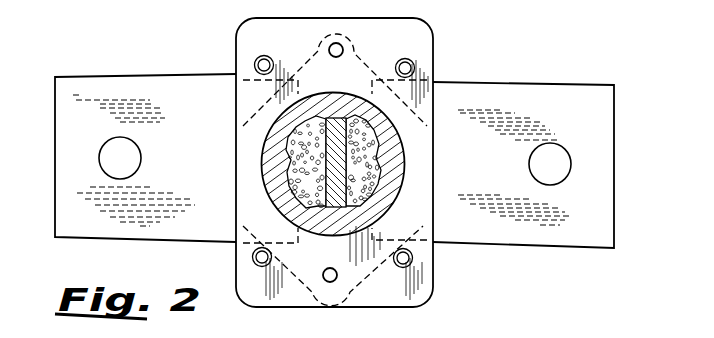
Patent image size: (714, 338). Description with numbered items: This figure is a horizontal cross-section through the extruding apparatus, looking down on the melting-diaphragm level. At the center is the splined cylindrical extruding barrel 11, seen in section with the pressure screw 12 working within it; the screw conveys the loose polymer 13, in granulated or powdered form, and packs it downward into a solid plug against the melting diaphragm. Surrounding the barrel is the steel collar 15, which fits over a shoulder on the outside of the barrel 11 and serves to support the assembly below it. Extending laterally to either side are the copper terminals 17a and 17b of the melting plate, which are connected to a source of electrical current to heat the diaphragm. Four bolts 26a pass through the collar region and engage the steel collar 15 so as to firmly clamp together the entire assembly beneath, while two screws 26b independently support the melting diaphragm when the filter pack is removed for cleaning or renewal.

The extruding barrel 11 is at (383, 122).
The pressure screw 12 is at (385, 204).
The loose polymer 13 is at (302, 206).
The steel collar 15 is at (434, 289).
The copper terminal 17a is at (75, 90).
The copper terminal 17b is at (573, 97).
The bolts 26a is at (255, 63).
The screws 26b is at (329, 47).